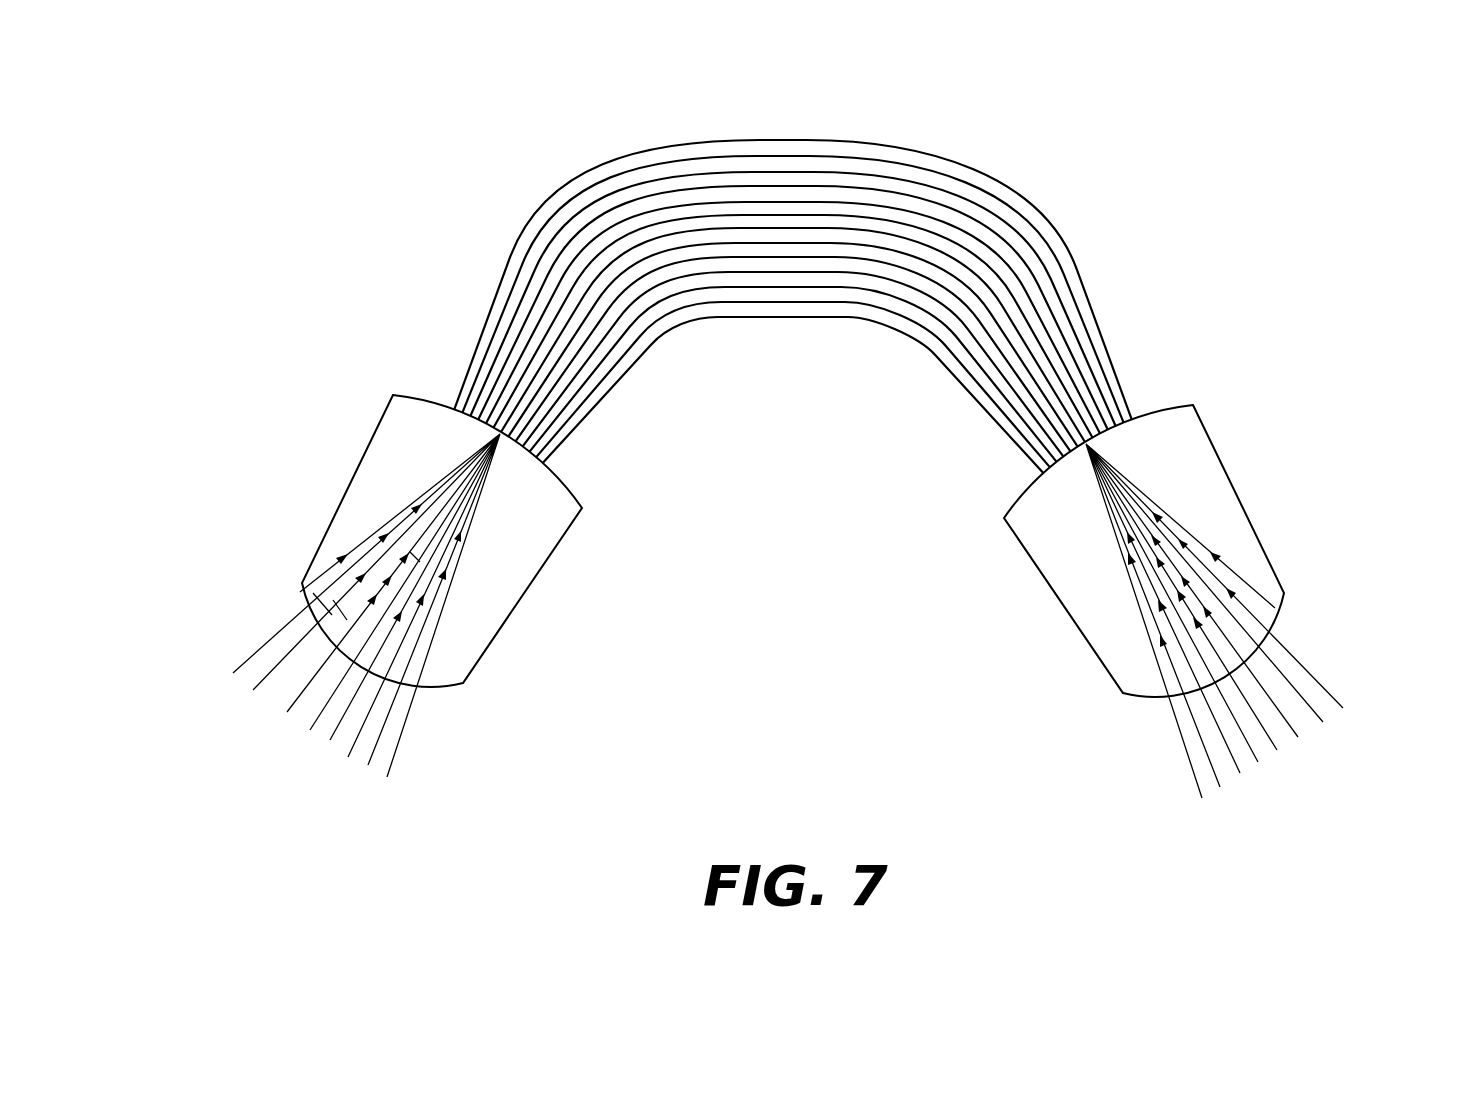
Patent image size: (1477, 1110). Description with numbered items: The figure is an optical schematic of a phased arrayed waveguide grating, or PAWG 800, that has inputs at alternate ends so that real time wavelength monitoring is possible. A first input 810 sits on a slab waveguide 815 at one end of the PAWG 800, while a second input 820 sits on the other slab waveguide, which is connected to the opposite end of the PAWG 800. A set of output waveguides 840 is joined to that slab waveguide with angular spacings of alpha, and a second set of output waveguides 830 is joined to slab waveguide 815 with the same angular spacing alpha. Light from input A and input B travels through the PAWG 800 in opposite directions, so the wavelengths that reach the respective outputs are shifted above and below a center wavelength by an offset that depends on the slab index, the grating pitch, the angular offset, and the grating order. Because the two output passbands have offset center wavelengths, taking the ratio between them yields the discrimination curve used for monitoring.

The PAWG 800 is at (785, 137).
The first input 810 is at (234, 686).
The slab waveguide 815 is at (386, 470).
The second input 820 is at (1347, 718).
The second set of output waveguides 830 is at (358, 805).
The output waveguides a1-a5 840 is at (1300, 793).